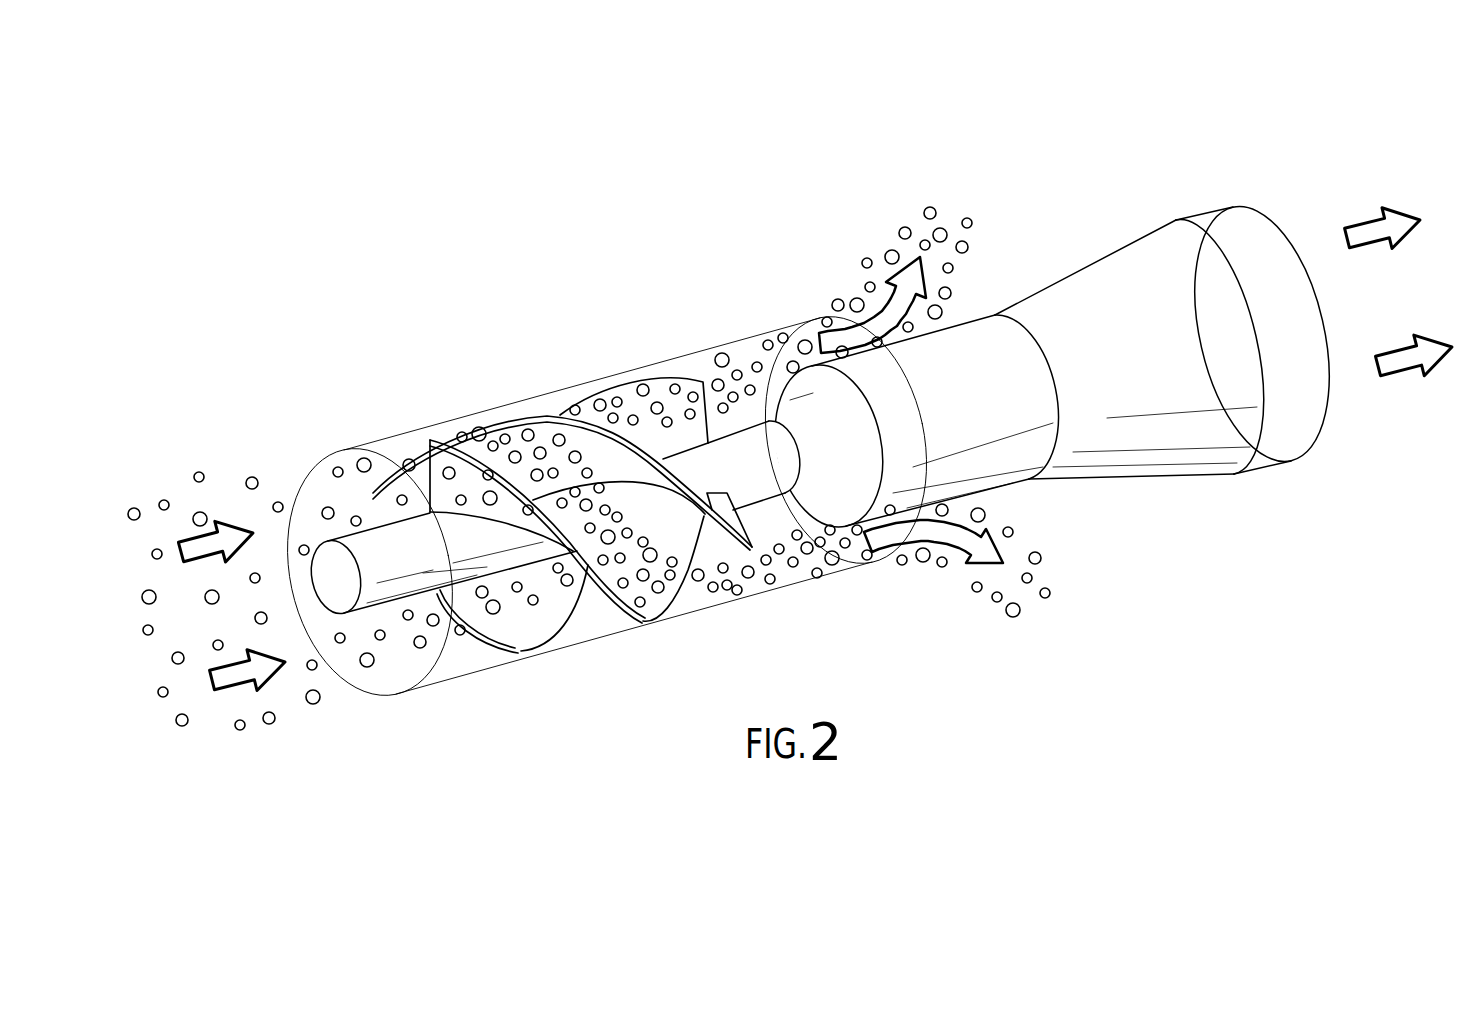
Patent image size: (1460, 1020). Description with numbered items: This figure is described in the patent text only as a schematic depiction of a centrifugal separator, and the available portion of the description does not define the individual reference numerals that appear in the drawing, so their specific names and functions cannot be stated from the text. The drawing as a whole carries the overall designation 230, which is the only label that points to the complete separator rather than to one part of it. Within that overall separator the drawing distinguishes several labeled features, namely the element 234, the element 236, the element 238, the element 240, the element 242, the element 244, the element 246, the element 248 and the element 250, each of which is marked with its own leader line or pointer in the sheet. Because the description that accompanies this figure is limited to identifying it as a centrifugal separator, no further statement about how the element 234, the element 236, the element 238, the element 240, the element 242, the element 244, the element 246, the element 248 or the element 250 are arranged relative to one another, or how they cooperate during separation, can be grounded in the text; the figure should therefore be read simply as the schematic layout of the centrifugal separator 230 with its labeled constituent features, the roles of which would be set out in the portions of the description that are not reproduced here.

The particle separator assembly 230 is at (505, 297).
The housing 234 is at (553, 650).
The inlet 236 is at (328, 487).
The particles 238 is at (490, 427).
The converging nozzle section 240 is at (1107, 270).
The inner core body 242 is at (803, 390).
The separated particles 244 is at (918, 226).
The particle discharge flow 246 is at (813, 325).
The clean fluid flow 248 is at (1403, 363).
The outlet 250 is at (1283, 238).